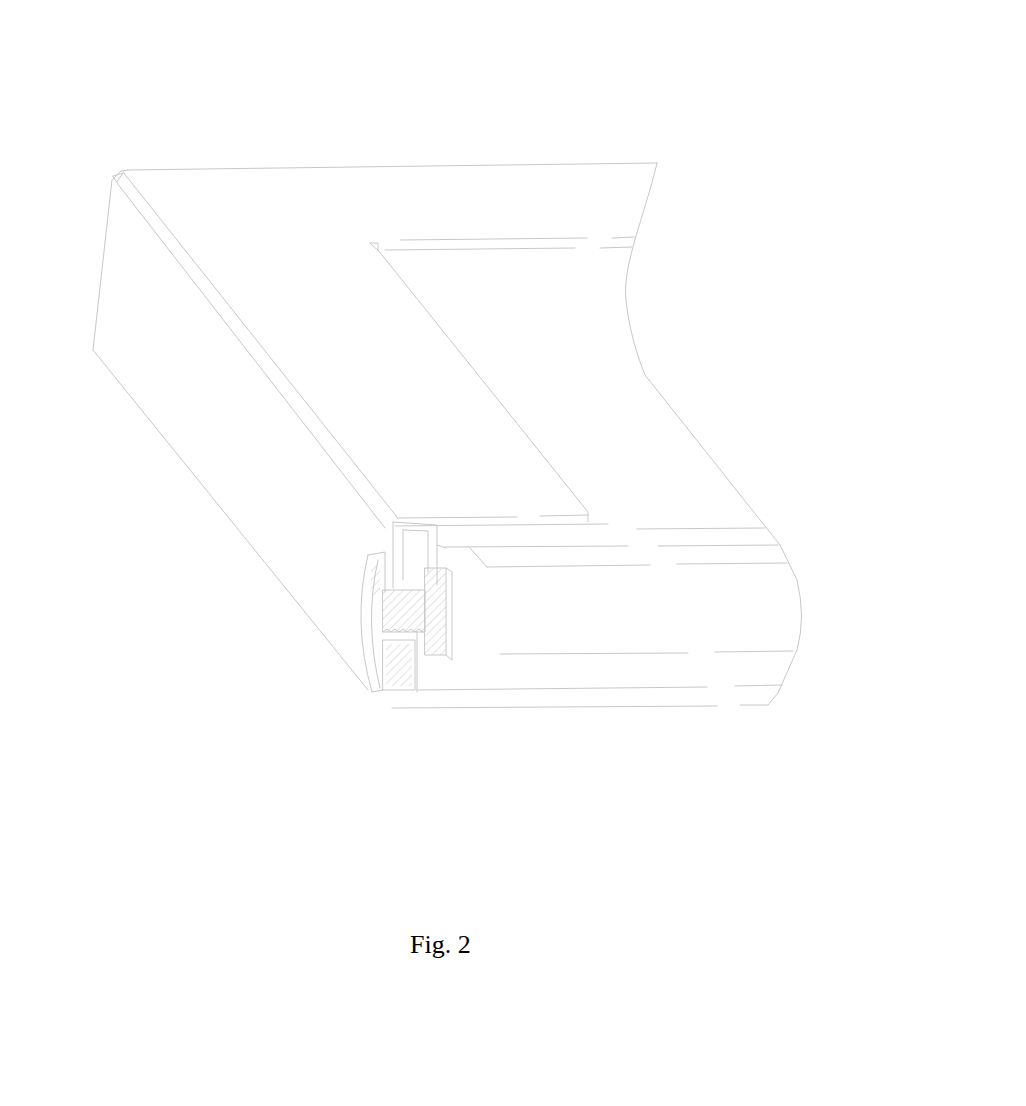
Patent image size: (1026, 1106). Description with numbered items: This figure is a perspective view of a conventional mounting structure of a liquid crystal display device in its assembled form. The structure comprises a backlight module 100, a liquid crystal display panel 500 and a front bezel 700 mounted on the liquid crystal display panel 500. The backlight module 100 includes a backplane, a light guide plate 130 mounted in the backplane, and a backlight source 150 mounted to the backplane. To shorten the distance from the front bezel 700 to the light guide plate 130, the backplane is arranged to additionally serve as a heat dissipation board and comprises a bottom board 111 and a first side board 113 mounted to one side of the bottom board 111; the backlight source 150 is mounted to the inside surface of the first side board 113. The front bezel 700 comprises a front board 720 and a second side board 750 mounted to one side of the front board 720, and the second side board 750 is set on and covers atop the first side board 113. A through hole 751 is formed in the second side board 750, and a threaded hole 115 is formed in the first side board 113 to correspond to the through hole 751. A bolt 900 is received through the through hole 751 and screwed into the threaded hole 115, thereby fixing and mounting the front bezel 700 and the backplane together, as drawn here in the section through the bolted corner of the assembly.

The backlight module 100 is at (722, 660).
The bottom board 111 is at (608, 730).
The first side board 113 is at (418, 546).
The threaded hole 115 is at (417, 627).
The light guide plate 130 is at (731, 619).
The backlight source 150 is at (445, 617).
The liquid crystal display panel 500 is at (577, 368).
The front bezel 700 is at (457, 203).
The front board 720 is at (310, 287).
The second side board 750 is at (183, 352).
The through hole 751 is at (380, 555).
The bolt 900 is at (392, 609).